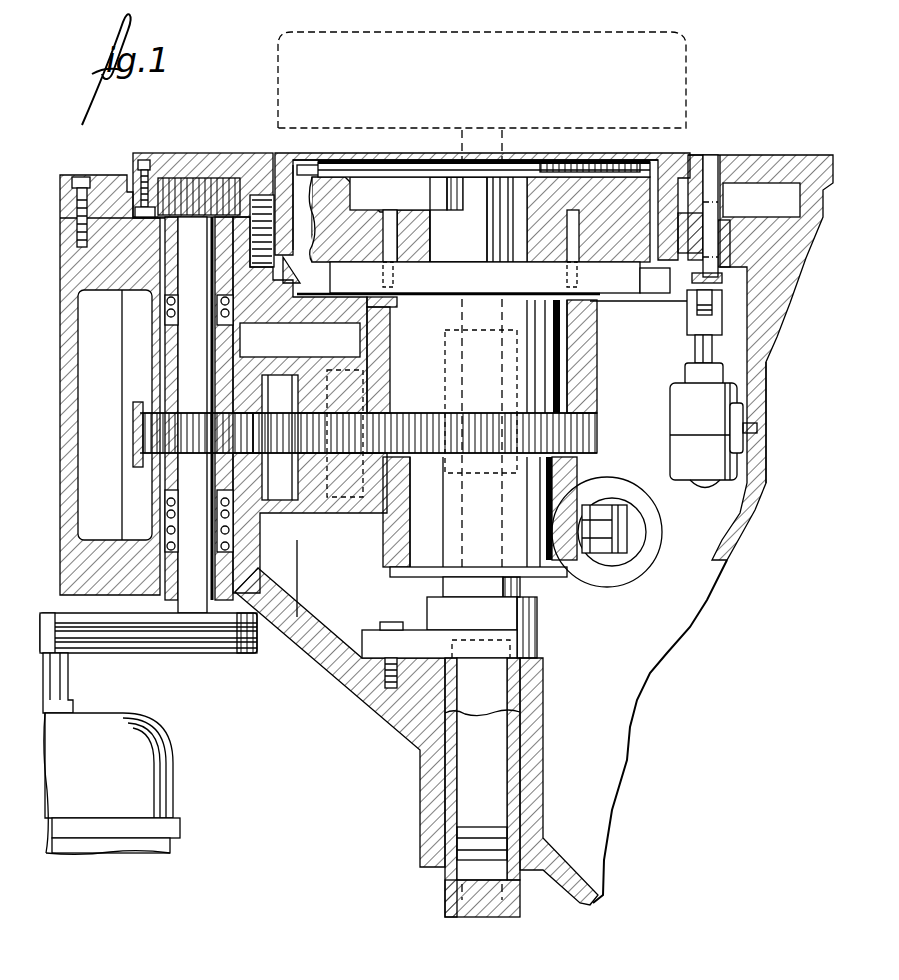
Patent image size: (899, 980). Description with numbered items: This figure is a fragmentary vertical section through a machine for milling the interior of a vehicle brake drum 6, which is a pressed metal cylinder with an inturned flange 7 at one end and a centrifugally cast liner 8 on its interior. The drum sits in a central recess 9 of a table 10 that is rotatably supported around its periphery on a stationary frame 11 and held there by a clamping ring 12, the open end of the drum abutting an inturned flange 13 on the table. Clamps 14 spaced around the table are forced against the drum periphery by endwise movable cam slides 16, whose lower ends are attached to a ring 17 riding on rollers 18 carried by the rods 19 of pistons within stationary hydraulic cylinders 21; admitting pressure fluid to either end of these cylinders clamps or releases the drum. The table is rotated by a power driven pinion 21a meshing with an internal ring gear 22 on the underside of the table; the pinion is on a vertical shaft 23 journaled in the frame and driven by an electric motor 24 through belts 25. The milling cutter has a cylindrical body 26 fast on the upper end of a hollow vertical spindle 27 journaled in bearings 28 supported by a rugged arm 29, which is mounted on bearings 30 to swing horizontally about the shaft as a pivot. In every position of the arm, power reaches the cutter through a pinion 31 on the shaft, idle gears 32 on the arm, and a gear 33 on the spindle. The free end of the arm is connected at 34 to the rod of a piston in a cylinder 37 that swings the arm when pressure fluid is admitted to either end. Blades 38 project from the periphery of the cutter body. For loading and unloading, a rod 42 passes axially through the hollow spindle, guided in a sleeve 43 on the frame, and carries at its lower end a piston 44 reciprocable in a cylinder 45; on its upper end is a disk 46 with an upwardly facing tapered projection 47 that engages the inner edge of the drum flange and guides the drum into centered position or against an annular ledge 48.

The vehicle brake drum 6 is at (278, 42).
The inturned flange 7 is at (630, 158).
The liner 8 is at (288, 152).
The central recess 9 is at (690, 158).
The table 10 is at (796, 160).
The stationary frame 11 is at (787, 253).
The clamping ring 12 is at (108, 174).
The inturned flange 13 is at (290, 260).
The clamps 14 is at (700, 200).
The cam slides 16 is at (728, 162).
The ring 17 is at (698, 312).
The rollers 18 is at (697, 327).
The rods 19 is at (700, 354).
The stationary hydraulic cylinders 21 is at (680, 408).
The power driven pinion 21a is at (185, 195).
The internal ring gear 22 is at (158, 148).
The vertical shaft 23 is at (185, 360).
The electric motor 24 is at (128, 845).
The belts 25 is at (117, 648).
The cylindrical body 26 is at (352, 215).
The vertical spindle 27 is at (553, 323).
The bearings 28 is at (577, 340).
The arm 29 is at (347, 510).
The bearings 30 is at (170, 306).
The pinion 31 is at (137, 445).
The idle gears 32 is at (335, 457).
The gear 33 is at (600, 432).
The connection 34 is at (644, 534).
The cylinder 37 is at (648, 556).
The blades 38 is at (308, 182).
The rod 42 is at (497, 230).
The sleeve 43 is at (447, 586).
The piston 44 is at (462, 843).
The cylinder 45 is at (445, 880).
The disk 46 is at (545, 162).
The tapered projection 47 is at (372, 163).
The annular ledge 48 is at (352, 160).